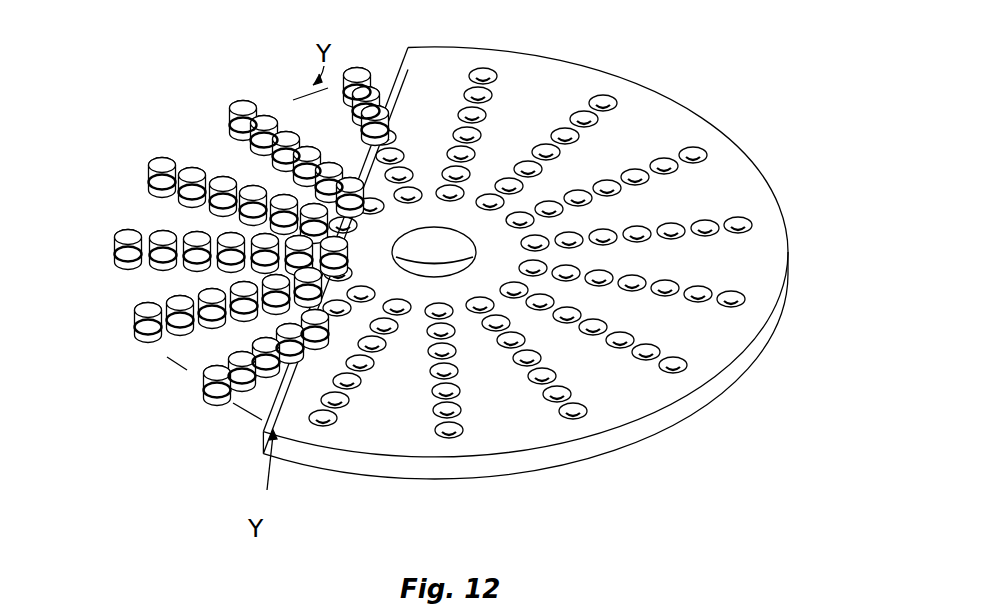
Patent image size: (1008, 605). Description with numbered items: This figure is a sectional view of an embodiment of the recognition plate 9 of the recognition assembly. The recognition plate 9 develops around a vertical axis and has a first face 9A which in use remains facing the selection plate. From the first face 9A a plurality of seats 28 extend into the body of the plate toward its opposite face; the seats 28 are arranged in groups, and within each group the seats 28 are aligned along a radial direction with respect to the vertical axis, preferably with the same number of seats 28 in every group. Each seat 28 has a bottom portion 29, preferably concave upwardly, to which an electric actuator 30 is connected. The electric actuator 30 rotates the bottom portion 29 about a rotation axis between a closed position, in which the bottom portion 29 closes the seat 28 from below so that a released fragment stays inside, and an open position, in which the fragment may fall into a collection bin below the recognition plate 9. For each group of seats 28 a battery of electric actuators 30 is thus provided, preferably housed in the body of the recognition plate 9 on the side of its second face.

The recognition plate 9 is at (737, 143).
The first face 9A is at (750, 257).
The seats 28 is at (450, 432).
The bottom portion 29 is at (233, 133).
The electric actuator 30 is at (249, 112).